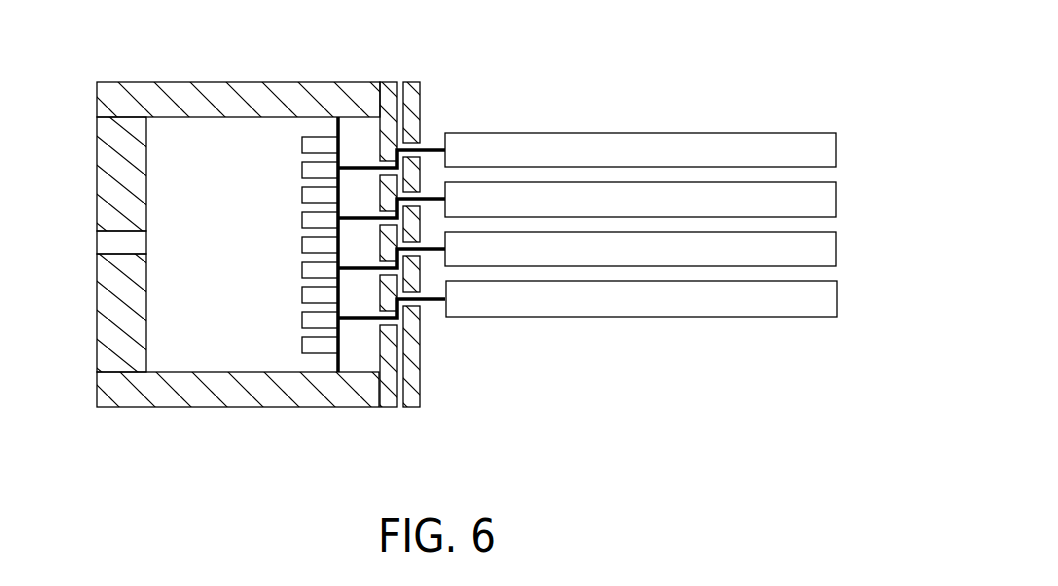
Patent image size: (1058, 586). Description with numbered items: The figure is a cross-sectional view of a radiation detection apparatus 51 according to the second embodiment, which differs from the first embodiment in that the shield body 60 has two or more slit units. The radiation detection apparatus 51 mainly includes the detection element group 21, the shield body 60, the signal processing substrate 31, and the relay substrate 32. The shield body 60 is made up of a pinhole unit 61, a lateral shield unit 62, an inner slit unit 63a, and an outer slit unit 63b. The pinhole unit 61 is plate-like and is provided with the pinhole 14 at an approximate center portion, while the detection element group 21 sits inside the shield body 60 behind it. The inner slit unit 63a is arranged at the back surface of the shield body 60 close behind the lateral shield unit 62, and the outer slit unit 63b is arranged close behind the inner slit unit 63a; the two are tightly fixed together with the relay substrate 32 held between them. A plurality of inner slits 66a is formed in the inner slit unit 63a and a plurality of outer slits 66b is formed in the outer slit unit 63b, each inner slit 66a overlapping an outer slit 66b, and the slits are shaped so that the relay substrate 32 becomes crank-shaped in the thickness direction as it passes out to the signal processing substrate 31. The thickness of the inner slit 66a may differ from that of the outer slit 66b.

The pinhole 14 is at (107, 250).
The detection element group 21 is at (317, 126).
The signal processing substrate 31 is at (546, 133).
The relay substrate 32 is at (437, 148).
The radiation detection apparatus 51 is at (542, 426).
The shield body 60 is at (204, 418).
The pinhole unit 61 is at (126, 82).
The lateral shield unit 62 is at (228, 82).
The inner slit unit 63a is at (387, 82).
The outer slit unit 63b is at (413, 82).
The inner slit 66a is at (375, 325).
The outer slit 66b is at (430, 306).